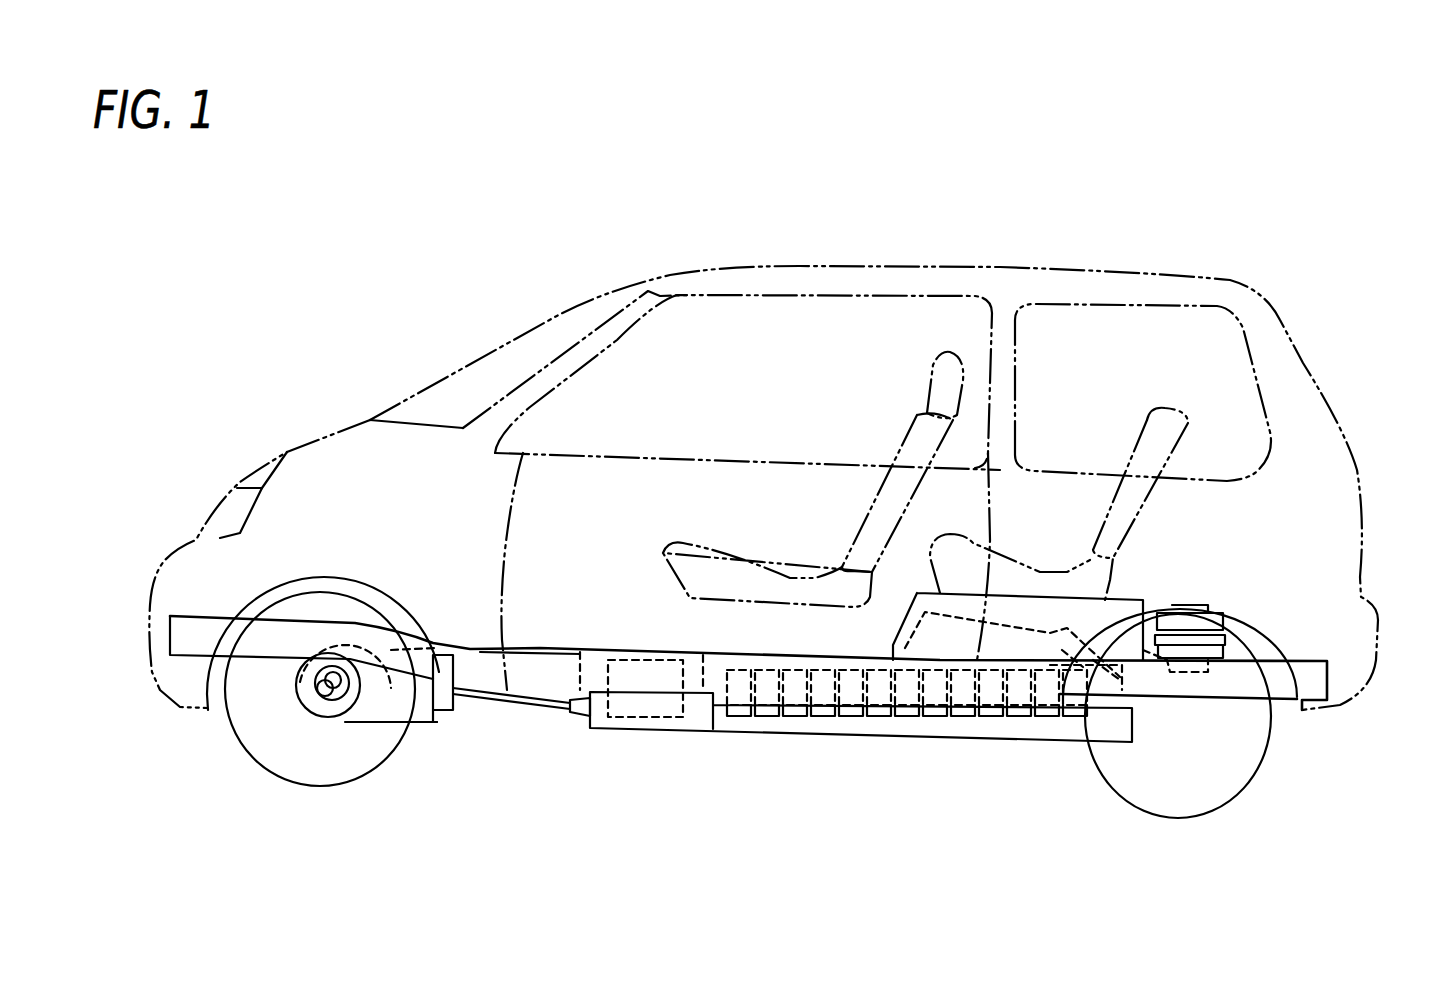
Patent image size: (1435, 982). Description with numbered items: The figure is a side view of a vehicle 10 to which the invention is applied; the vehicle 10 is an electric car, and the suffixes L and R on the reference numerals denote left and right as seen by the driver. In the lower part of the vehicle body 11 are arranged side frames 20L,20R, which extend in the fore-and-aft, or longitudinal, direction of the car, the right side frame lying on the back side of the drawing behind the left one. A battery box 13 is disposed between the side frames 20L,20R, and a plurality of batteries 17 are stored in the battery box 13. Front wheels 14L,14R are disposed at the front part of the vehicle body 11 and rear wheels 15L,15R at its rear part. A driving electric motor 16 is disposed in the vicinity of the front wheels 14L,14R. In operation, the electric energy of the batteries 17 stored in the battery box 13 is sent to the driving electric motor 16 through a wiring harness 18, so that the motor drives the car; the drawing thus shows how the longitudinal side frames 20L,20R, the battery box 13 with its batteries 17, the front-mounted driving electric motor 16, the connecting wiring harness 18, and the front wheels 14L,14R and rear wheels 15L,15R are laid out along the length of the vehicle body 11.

The vehicle 10 is at (480, 233).
The vehicle body 11 is at (895, 267).
The battery box 13 is at (945, 742).
The front wheels 14L,14R is at (245, 750).
The rear wheels 15L,15R is at (1260, 770).
The driving electric motor 16 is at (400, 722).
The batteries 17 is at (823, 715).
The wiring harness 18 is at (537, 707).
The side frames 20L,20R is at (648, 630).